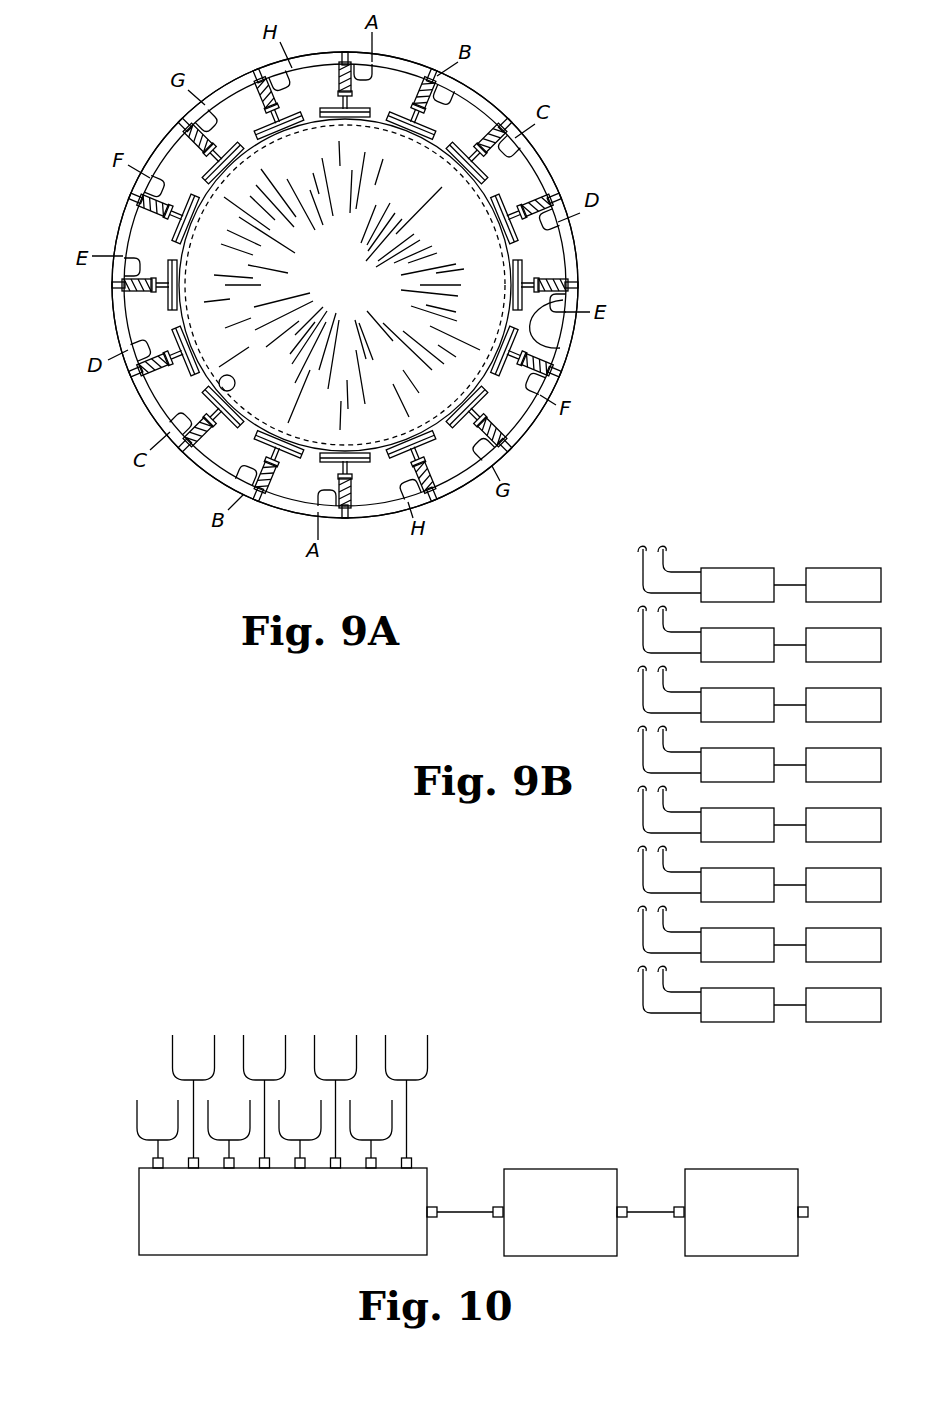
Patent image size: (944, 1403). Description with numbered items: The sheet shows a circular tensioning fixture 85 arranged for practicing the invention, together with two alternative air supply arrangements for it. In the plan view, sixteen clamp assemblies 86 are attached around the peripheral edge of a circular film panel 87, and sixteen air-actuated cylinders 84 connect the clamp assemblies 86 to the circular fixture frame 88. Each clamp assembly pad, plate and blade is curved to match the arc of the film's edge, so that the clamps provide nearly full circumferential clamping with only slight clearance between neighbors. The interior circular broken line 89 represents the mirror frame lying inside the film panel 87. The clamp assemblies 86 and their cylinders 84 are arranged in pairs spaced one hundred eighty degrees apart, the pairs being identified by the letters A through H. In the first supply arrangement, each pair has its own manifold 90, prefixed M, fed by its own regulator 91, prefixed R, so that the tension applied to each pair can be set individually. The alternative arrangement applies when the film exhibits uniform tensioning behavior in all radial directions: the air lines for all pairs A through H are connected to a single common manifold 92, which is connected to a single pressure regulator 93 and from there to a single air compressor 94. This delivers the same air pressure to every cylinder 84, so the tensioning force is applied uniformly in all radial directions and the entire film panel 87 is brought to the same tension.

In FIG. 9A, the air-actuated cylinder 84 is at (560, 347).
In FIG. 9A, the circular tensioning fixture 85 is at (566, 68).
In FIG. 9A, the clamp assembly 86 is at (522, 264).
In FIG. 9A, the circular film panel 87 is at (443, 324).
In FIG. 9A, the circular fixture frame 88 is at (530, 420).
In FIG. 9A, the mirror frame 89 is at (219, 386).
In FIG. 9B, the manifold 90 is at (740, 568).
In FIG. 9B, the regulator 91 is at (840, 568).
In FIG. 10, the manifold 92 is at (150, 1226).
In FIG. 10, the pressure regulator 93 is at (556, 1180).
In FIG. 10, the air compressor 94 is at (742, 1180).